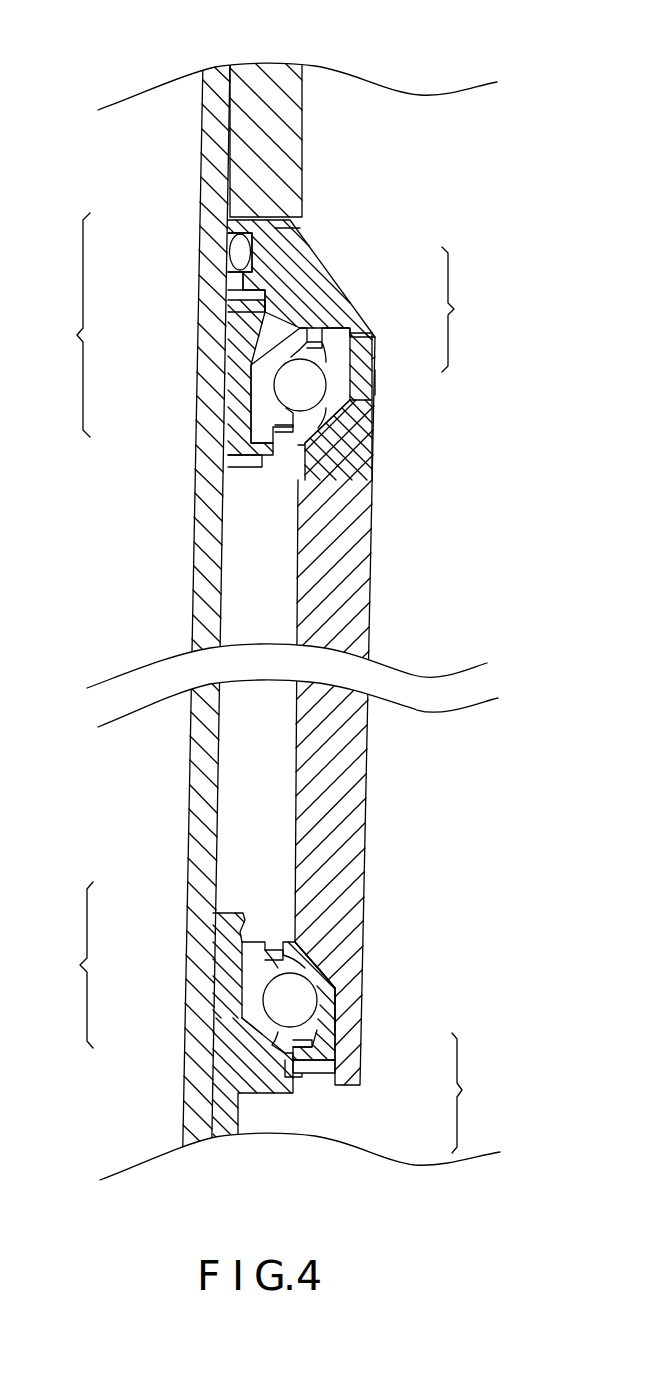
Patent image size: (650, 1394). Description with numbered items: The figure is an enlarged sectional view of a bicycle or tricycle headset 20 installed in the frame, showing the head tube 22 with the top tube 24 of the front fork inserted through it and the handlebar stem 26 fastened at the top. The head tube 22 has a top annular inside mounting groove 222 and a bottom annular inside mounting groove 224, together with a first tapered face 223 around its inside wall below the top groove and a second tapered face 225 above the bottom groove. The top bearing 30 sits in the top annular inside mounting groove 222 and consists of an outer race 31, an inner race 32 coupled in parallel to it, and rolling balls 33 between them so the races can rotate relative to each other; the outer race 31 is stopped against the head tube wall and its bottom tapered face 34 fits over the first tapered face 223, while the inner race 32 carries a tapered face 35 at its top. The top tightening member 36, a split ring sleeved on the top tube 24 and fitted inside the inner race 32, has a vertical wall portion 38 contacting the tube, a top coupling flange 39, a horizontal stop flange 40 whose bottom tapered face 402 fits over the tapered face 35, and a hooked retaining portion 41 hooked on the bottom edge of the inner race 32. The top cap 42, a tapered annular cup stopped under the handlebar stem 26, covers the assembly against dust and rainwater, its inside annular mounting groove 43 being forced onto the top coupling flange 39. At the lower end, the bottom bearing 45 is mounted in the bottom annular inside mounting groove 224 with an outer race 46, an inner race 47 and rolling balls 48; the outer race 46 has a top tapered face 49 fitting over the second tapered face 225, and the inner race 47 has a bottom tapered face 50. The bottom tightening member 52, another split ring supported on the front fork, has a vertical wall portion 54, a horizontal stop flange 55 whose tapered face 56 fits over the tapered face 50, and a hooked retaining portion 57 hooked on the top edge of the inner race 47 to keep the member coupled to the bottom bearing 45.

The headset 20 is at (466, 256).
The head tube 22 is at (357, 733).
The top tube 24 is at (202, 510).
The handlebar stem 26 is at (295, 82).
The top bearing 30 is at (465, 309).
The outer race 31 is at (340, 355).
The inner race 32 is at (345, 320).
The rolling balls 33 is at (315, 387).
The tapered face 34 is at (333, 403).
The tapered face 35 is at (342, 490).
The top tightening member 36 is at (65, 325).
The vertical wall portion 38 is at (227, 402).
The top coupling flange 39 is at (227, 280).
The horizontal stop flange 40 is at (257, 332).
The hooked retaining portion 41 is at (233, 458).
The top cap 42 is at (300, 228).
The inside annular mounting groove 43 is at (265, 243).
The bottom bearing 45 is at (474, 1093).
The outer race 46 is at (320, 1030).
The inner race 47 is at (300, 1067).
The rolling balls 48 is at (293, 1013).
The tapered face 49 is at (333, 925).
The tapered face 50 is at (290, 1050).
The bottom tightening member 52 is at (71, 965).
The vertical wall portion 54 is at (230, 985).
The horizontal stop flange 55 is at (227, 1060).
The tapered face 56 is at (253, 1028).
The hooked retaining portion 57 is at (233, 923).
The top annular inside mounting groove 222 is at (375, 383).
The first tapered face 223 is at (300, 443).
The bottom annular inside mounting groove 224 is at (335, 1010).
The second tapered face 225 is at (323, 965).
The tapered face 402 is at (290, 245).